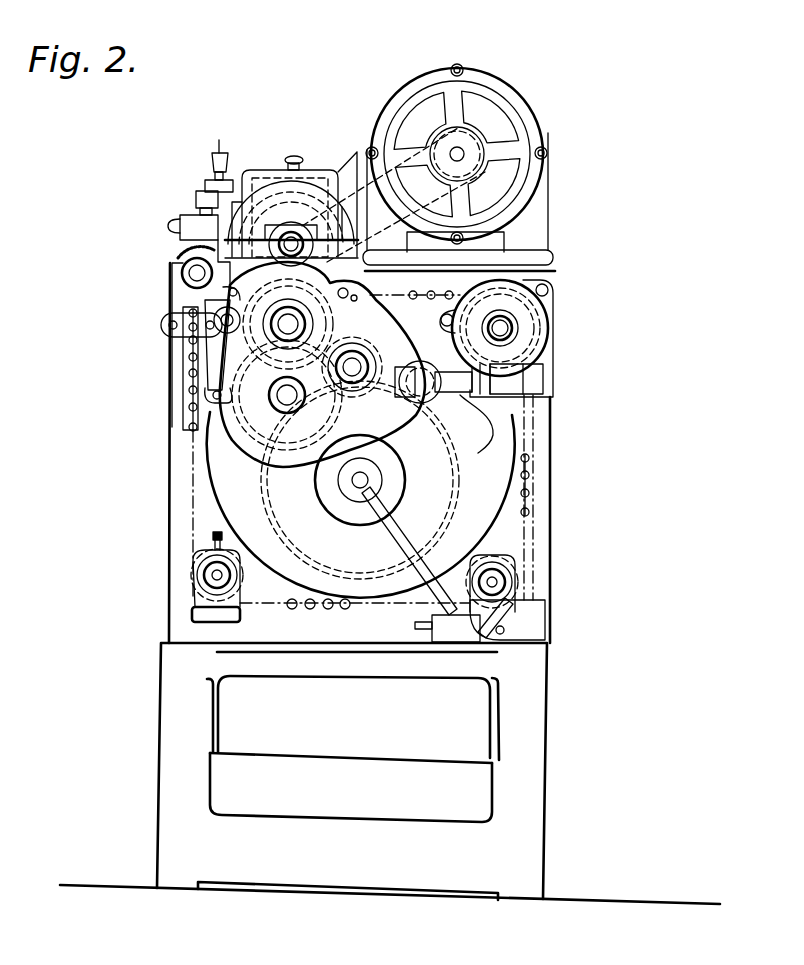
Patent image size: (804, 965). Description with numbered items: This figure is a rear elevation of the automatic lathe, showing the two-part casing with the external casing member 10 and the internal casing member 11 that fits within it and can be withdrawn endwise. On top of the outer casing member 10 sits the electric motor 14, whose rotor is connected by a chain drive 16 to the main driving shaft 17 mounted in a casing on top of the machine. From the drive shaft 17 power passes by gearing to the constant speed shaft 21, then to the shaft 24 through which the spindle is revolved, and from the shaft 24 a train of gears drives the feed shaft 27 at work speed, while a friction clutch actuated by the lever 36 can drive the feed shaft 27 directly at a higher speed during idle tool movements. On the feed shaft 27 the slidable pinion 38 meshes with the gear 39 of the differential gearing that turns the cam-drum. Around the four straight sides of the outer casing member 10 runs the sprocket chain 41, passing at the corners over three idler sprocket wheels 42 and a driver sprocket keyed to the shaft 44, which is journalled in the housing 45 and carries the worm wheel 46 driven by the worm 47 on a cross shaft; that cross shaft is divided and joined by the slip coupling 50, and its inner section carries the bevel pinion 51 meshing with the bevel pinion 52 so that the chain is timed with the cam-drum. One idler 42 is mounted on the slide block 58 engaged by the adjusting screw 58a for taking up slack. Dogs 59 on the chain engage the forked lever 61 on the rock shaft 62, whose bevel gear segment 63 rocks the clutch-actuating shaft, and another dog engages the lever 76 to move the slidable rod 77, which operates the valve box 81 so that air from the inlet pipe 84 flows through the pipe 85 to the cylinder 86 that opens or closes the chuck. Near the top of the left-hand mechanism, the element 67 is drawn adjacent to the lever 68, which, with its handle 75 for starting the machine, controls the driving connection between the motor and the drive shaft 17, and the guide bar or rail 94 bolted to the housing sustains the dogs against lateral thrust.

The external casing member 10 is at (551, 557).
The internal casing member 11 is at (524, 508).
The electric motor 14 is at (527, 145).
The chain drive 16 is at (393, 152).
The main driving shaft 17 is at (293, 241).
The constant speed shaft 21 is at (286, 328).
The shaft 24 is at (277, 402).
The feed shaft 27 is at (353, 387).
The lever 36 is at (325, 312).
The pinion 38 is at (372, 347).
The gear of the differential gearing 39 is at (453, 478).
The sprocket chain 41 is at (189, 435).
The idler sprocket wheel 42 is at (192, 580).
The shaft 44 is at (505, 328).
The housing 45 is at (520, 280).
The worm wheel 46 is at (530, 370).
The worm 47 is at (525, 390).
The slip coupling 50 is at (479, 428).
The bevel pinion 51 is at (403, 367).
The bevel pinion 52 is at (437, 397).
The slide block 58 is at (193, 625).
The adjusting screw 58a is at (212, 538).
The dogs 59 is at (205, 360).
The lever 61 is at (178, 312).
The rock shaft 62 is at (182, 273).
The bevel gear segment 63 is at (190, 248).
The link 67 is at (200, 211).
The lever 68 is at (198, 196).
The handle 75 is at (215, 149).
The lever 76 is at (522, 615).
The slidable rod 77 is at (503, 650).
The valve box 81 is at (449, 642).
The inlet pipe 84 is at (424, 632).
The pipe 85 is at (405, 541).
The cylinder 86 is at (372, 484).
The bar or rail 94 is at (205, 388).